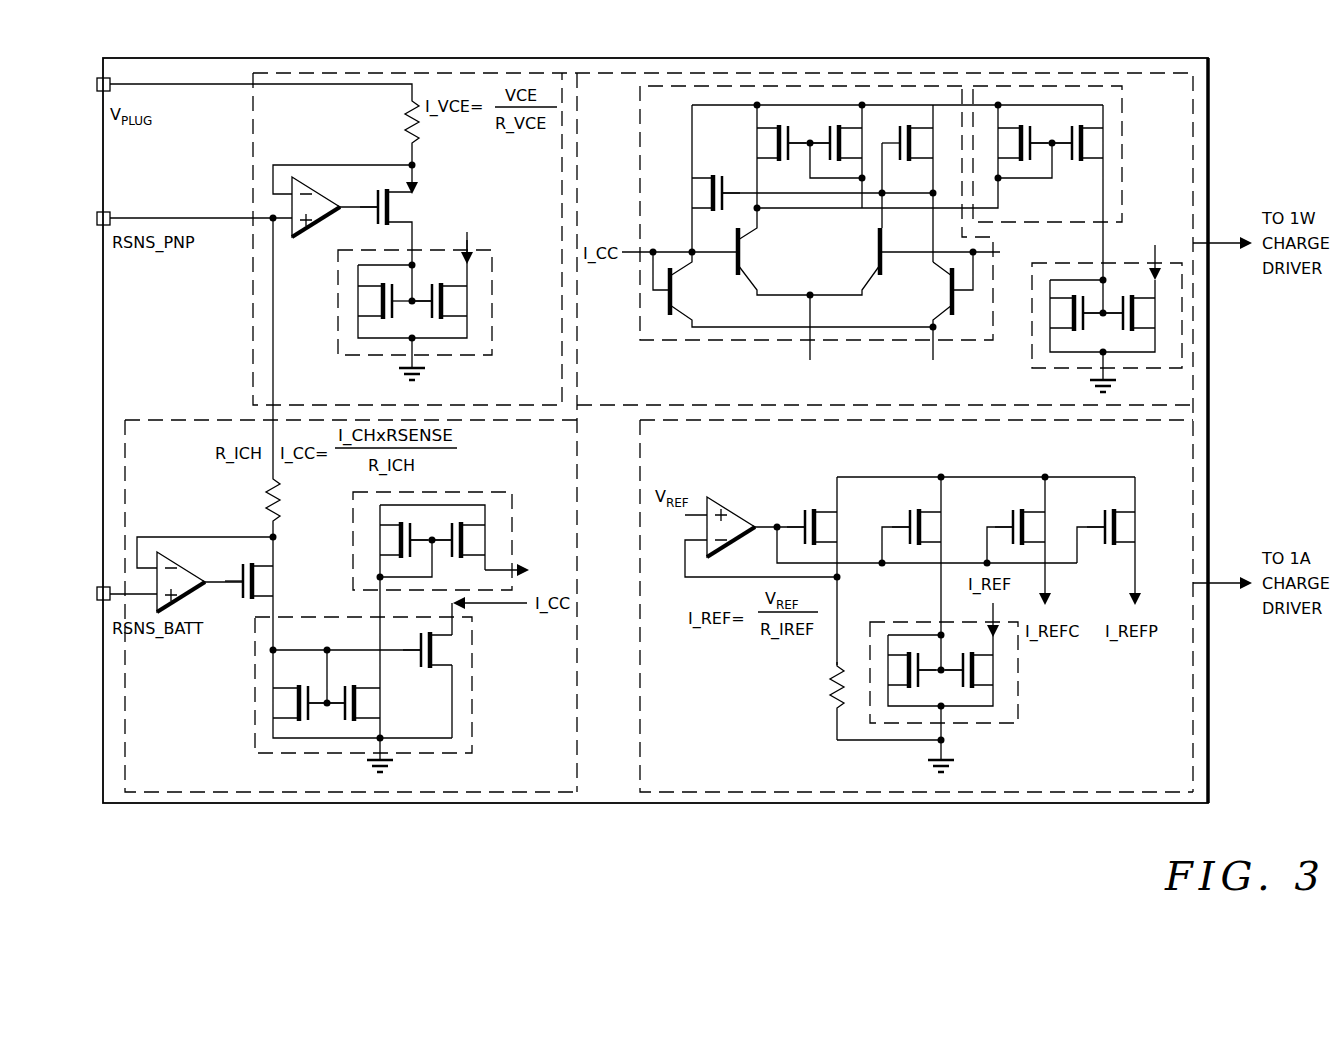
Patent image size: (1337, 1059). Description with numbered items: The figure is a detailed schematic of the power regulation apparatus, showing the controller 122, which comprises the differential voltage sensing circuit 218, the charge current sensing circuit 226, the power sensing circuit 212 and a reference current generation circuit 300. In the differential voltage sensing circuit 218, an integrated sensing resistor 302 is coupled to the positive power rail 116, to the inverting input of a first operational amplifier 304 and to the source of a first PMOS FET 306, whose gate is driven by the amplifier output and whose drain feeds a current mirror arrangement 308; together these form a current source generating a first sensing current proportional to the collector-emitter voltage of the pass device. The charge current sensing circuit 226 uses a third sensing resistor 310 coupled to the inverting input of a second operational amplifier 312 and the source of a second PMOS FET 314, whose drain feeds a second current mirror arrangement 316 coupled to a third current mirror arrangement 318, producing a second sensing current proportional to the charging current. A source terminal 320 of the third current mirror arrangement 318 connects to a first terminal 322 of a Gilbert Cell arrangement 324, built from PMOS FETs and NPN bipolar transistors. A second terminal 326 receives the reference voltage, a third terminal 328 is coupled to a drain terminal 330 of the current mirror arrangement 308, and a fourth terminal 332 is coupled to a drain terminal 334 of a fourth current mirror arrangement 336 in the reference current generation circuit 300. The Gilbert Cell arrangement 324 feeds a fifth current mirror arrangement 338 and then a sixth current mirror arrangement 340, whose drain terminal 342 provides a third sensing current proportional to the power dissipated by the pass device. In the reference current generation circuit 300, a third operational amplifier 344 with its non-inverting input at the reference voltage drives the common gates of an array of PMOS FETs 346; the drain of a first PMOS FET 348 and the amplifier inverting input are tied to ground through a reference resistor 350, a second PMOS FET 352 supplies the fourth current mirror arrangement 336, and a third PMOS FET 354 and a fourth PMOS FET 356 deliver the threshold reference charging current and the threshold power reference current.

The positive power rail 116 is at (216, 84).
The controller 122 is at (1202, 108).
The power sensing circuit 212 is at (607, 414).
The differential voltage sensing circuit 218 is at (253, 301).
The charge current sensing circuit 226 is at (577, 525).
The reference current generation circuit 300 is at (640, 595).
The integrated sensing resistor 302 is at (408, 118).
The first operational amplifier 304 is at (325, 232).
The first P-channel MOS FET 306 is at (405, 196).
The current mirror arrangement 308 is at (492, 294).
The third sensing resistor 310 is at (270, 492).
The second operational amplifier 312 is at (190, 590).
The second PMOS FET 314 is at (265, 570).
The second current mirror arrangement 316 is at (472, 690).
The third current mirror arrangement 318 is at (482, 490).
The source terminal 320 is at (540, 562).
The first terminal 322 is at (655, 252).
The Gilbert Cell arrangement 324 is at (640, 182).
The second terminal 326 is at (1045, 250).
The third terminal 328 is at (780, 370).
The drain terminal 330 is at (478, 204).
The fourth terminal 332 is at (975, 372).
The drain terminal 334 is at (1000, 645).
The fourth current mirror arrangement 336 is at (1000, 727).
The fifth current mirror arrangement 338 is at (1122, 155).
The sixth current mirror arrangement 340 is at (1052, 372).
The drain terminal 342 is at (1150, 215).
The third operational amplifier 344 is at (735, 512).
The array of PMOS FETs 346 is at (1080, 472).
The first PMOS FET 348 is at (843, 518).
The reference resistor 350 is at (833, 705).
The second PMOS FET 352 is at (948, 518).
The third PMOS FET 354 is at (1050, 518).
The fourth PMOS FET 356 is at (1140, 518).